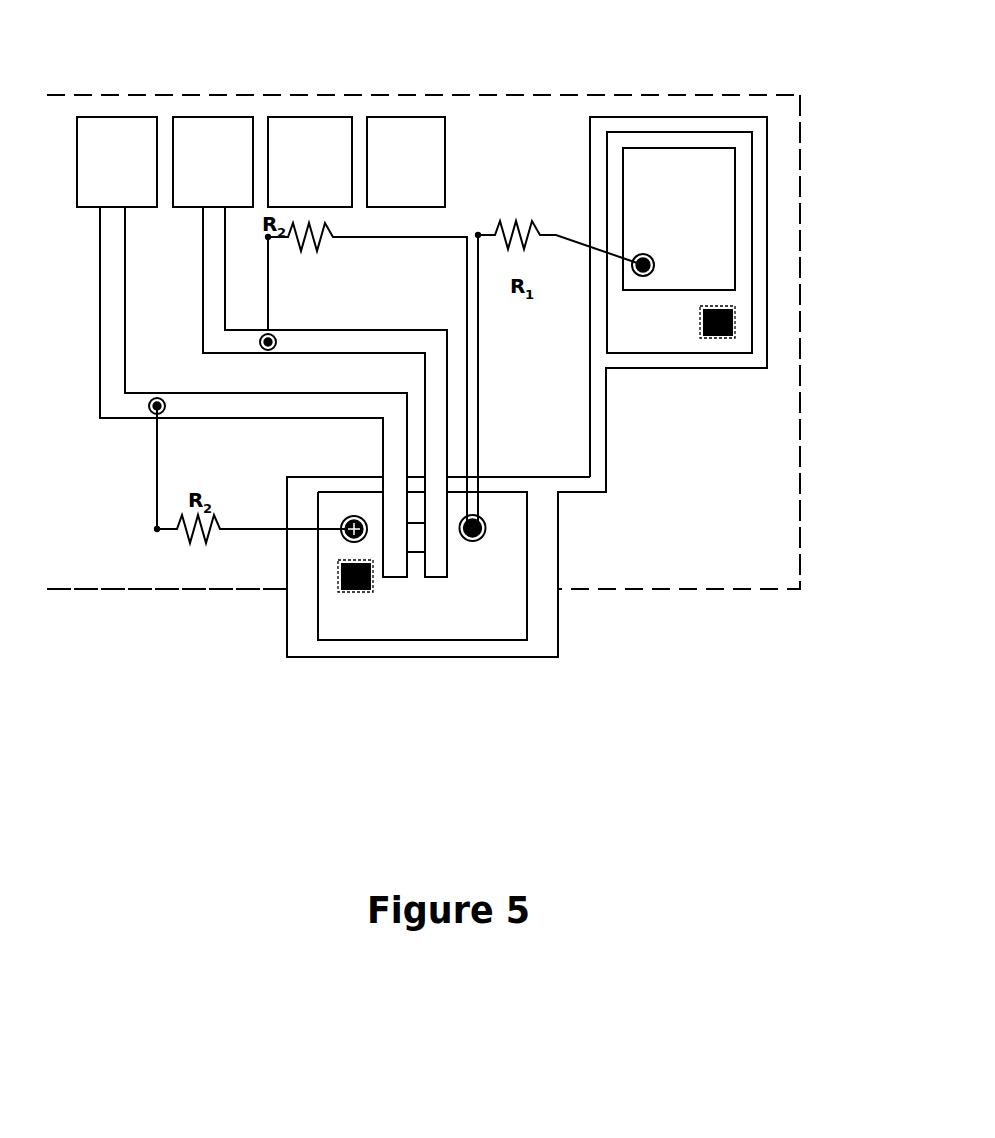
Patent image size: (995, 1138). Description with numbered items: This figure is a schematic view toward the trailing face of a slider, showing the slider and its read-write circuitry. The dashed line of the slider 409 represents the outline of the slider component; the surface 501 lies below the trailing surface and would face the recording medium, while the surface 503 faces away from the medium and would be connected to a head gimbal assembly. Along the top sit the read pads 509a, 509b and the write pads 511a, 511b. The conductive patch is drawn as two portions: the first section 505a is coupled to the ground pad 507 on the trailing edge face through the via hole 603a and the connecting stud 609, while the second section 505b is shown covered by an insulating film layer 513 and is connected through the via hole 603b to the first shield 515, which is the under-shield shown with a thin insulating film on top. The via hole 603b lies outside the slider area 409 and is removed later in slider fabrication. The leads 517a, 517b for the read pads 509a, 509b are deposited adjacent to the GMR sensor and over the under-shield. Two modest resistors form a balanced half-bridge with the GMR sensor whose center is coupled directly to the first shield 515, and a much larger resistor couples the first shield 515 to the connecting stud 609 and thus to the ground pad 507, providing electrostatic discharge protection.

The slider 409 is at (803, 416).
The surface 501 is at (108, 593).
The surface 503 is at (540, 92).
The first section of conductive patch 505a is at (752, 115).
The second section of conductive patch 505b is at (300, 658).
The ground pad 507 is at (640, 172).
The read pad 509a is at (117, 115).
The read pad 509b is at (218, 115).
The write pad 511a is at (311, 115).
The write pad 511b is at (406, 115).
The insulating film layer 513 is at (542, 623).
The first shield 515 is at (510, 607).
The lead 517a is at (395, 556).
The lead 517b is at (438, 556).
The via hole 603a is at (737, 320).
The via hole 603b is at (338, 575).
The connecting stud 609 is at (705, 142).